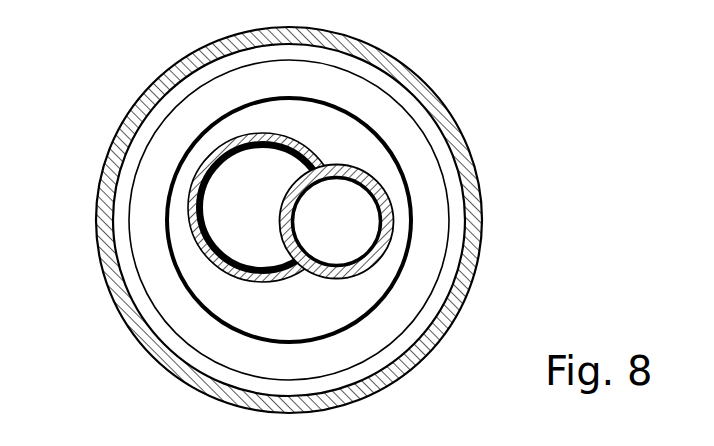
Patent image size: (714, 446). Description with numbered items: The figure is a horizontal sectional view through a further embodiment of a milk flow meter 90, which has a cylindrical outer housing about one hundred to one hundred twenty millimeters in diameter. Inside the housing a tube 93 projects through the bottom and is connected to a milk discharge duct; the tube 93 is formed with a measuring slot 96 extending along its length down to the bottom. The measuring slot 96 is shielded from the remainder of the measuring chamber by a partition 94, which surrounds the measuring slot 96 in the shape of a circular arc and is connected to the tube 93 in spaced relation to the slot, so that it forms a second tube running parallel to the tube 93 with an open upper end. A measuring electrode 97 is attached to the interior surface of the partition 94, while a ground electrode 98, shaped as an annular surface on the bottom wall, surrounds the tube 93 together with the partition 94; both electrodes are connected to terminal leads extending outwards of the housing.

The milk flow meter 90 is at (517, 155).
The tube 93 is at (385, 228).
The partition 94 is at (287, 140).
The measuring slot 96 is at (288, 222).
The measuring electrode 97 is at (190, 210).
The ground electrode 98 is at (400, 135).